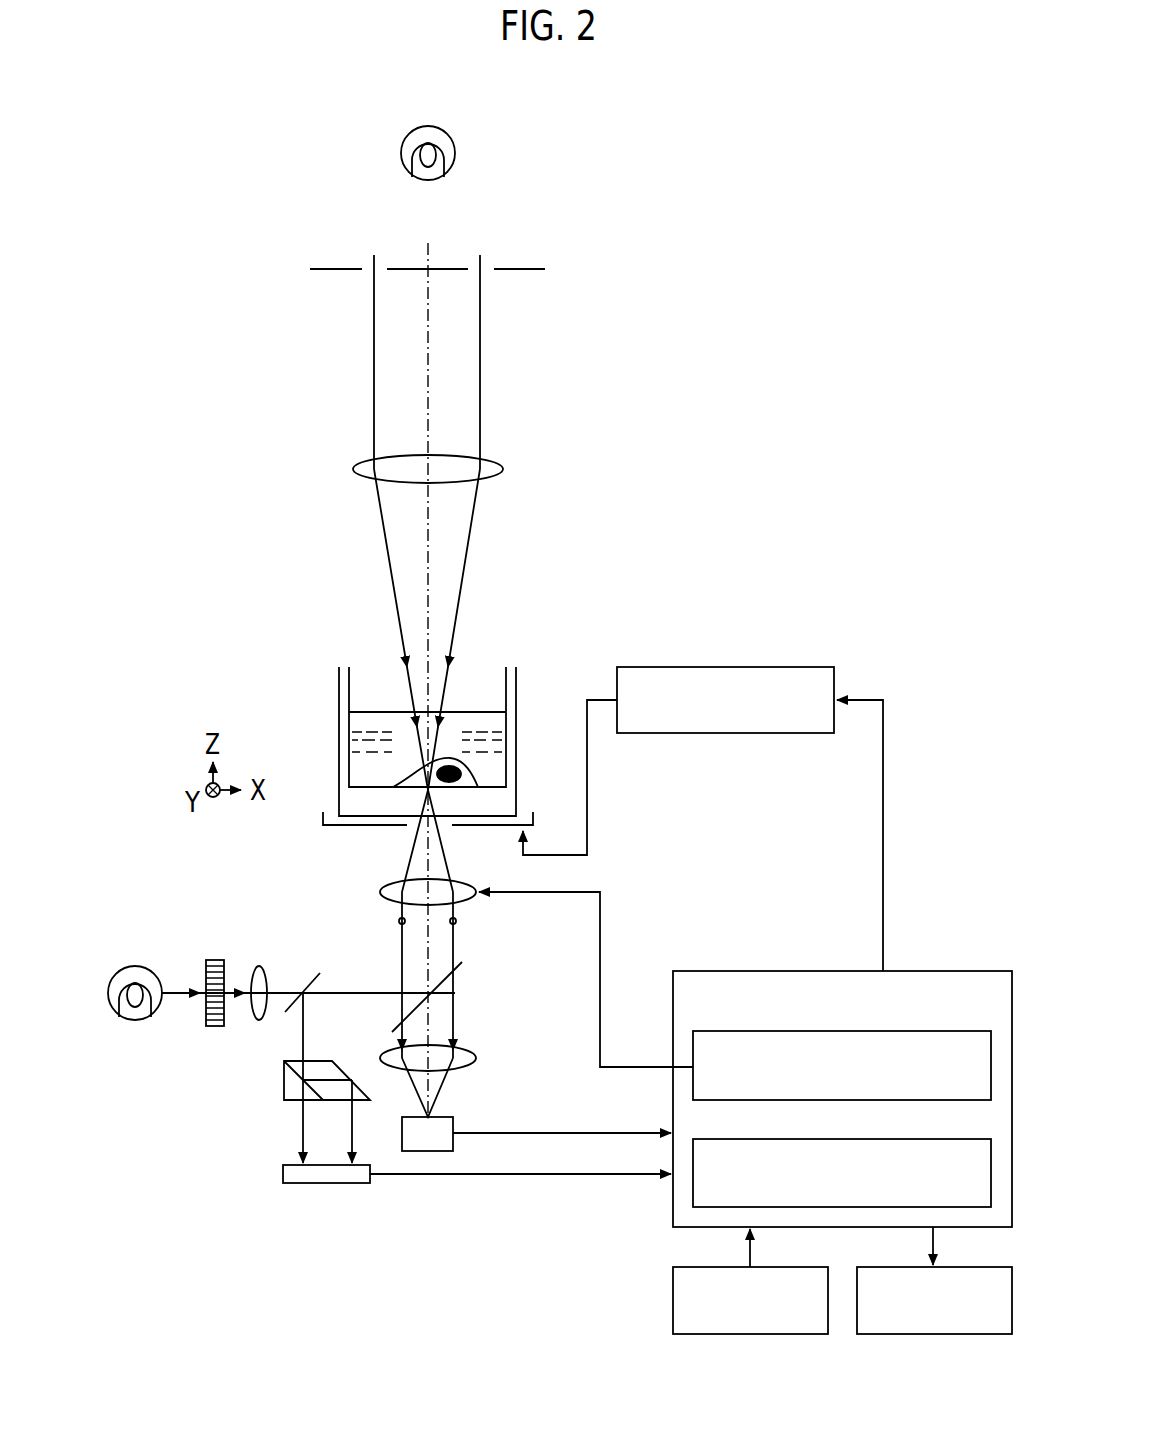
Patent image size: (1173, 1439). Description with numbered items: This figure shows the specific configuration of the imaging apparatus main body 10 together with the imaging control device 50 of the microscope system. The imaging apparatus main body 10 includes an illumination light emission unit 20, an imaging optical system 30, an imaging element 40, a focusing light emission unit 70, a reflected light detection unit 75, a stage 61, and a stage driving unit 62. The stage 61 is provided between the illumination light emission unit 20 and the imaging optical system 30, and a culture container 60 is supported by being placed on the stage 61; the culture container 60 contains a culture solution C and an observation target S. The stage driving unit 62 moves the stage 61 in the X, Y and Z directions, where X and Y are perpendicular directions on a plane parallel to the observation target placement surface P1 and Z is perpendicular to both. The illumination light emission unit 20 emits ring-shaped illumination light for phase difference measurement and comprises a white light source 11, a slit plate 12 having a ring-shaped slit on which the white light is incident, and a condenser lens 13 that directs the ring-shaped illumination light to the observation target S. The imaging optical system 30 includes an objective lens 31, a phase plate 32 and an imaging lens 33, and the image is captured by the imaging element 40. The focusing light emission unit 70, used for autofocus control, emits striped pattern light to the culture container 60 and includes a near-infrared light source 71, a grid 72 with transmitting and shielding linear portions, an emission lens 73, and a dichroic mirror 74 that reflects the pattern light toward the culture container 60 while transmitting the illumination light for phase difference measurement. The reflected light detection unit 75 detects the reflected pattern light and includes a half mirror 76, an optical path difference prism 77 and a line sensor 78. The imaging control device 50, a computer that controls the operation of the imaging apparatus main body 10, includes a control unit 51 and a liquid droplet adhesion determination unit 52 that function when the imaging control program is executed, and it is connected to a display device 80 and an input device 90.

The imaging apparatus main body 10 is at (233, 570).
The white light source 11 is at (456, 153).
The slit plate 12 is at (528, 268).
The condenser lens 13 is at (503, 469).
The illumination light emission unit 20 is at (296, 260).
The imaging optical system 30 is at (308, 910).
The objective lens 31 is at (380, 893).
The phase plate 32 is at (398, 921).
The imaging lens 33 is at (476, 1058).
The imaging element 40 is at (453, 1117).
The imaging control device 50 is at (960, 971).
The control unit 51 is at (950, 1031).
The liquid droplet adhesion determination unit 52 is at (950, 1139).
The culture container 60 is at (338, 712).
The stage 61 is at (478, 828).
The stage driving unit 62 is at (793, 667).
The focusing light emission unit 70 is at (217, 1040).
The near-infrared light source 71 is at (139, 964).
The grid 72 is at (213, 958).
The emission lens 73 is at (266, 974).
The dichroic mirror 74 is at (463, 970).
The reflected light detection unit 75 is at (270, 1124).
The half mirror 76 is at (321, 977).
The optical path difference prism 77 is at (310, 1061).
The line sensor 78 is at (343, 1183).
The display device 80 is at (975, 1267).
The input device 90 is at (790, 1267).
The culture solution C is at (505, 718).
The observation target S is at (465, 775).
The observation target placement surface P1 is at (366, 795).